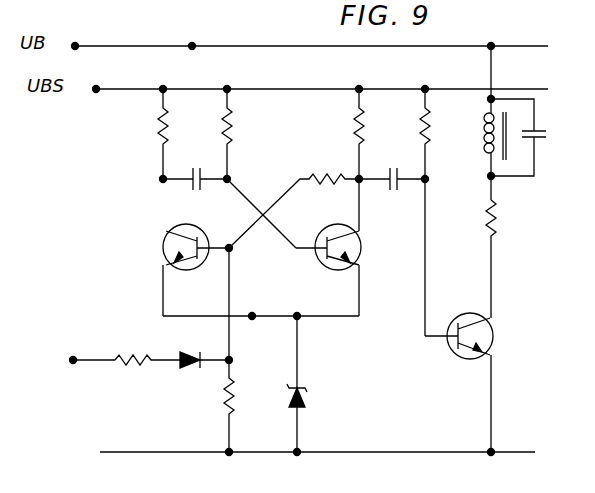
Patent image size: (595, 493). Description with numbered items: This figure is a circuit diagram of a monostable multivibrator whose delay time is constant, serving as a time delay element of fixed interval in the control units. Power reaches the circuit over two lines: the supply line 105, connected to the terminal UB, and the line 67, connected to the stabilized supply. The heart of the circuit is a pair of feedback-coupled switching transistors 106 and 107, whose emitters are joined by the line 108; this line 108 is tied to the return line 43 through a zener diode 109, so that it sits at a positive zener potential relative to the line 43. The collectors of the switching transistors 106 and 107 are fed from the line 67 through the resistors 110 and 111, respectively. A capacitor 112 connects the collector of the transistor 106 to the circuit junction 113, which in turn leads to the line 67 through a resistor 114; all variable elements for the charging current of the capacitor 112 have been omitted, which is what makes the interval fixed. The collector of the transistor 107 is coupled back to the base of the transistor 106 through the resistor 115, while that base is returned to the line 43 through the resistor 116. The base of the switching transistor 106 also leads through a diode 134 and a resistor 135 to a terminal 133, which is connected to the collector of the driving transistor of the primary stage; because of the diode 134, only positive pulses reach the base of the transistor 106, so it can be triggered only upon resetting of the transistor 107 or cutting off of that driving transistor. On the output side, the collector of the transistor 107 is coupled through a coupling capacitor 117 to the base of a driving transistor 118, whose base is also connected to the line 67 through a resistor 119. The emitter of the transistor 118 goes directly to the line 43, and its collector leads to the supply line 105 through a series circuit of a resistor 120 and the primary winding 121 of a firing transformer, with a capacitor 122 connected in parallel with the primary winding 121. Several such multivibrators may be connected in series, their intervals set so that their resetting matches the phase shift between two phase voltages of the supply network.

The supply line 105 is at (318, 48).
The line 67 is at (265, 88).
The resistor 110 is at (157, 128).
The resistor 114 is at (222, 120).
The capacitor 112 is at (190, 170).
The circuit junction 113 is at (228, 185).
The resistor 115 is at (326, 186).
The resistor 111 is at (353, 128).
The resistor 119 is at (420, 128).
The coupling capacitor 117 is at (398, 190).
The primary winding of firing transformer 121 is at (486, 137).
The capacitor 122 is at (540, 135).
The resistor 120 is at (497, 215).
The driving transistor 118 is at (494, 332).
The switching transistor 106 is at (184, 268).
The switching transistor 107 is at (336, 268).
The line 108 is at (270, 302).
The resistor 116 is at (234, 406).
The zener diode 109 is at (302, 402).
The terminal 133 is at (73, 364).
The resistor 135 is at (137, 352).
The diode 134 is at (186, 370).
The ground line 43 is at (135, 454).